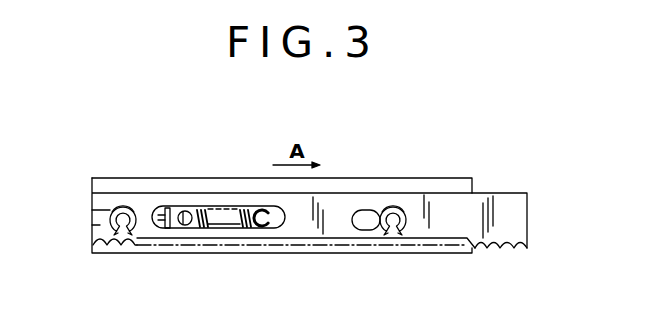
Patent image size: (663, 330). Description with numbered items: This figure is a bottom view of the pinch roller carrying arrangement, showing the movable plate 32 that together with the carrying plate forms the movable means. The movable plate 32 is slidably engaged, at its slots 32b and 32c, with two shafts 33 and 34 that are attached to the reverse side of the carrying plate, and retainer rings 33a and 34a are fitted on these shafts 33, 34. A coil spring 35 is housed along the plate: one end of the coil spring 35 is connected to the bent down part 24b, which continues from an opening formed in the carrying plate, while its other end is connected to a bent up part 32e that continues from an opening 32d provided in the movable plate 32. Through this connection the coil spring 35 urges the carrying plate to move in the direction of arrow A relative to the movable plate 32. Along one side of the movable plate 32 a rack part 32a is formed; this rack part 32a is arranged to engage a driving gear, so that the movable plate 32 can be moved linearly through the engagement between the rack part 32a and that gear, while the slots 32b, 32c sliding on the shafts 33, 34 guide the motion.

The movable plate 32 is at (510, 193).
The rack part 32a is at (478, 250).
The slot 32b is at (92, 225).
The slot 32c is at (368, 231).
The opening 32d is at (262, 229).
The bent up part 32e is at (268, 226).
The shaft 33 is at (123, 236).
The retainer ring 33a is at (125, 206).
The shaft 34 is at (395, 236).
The retainer ring 34a is at (412, 206).
The bent down part 24b is at (183, 228).
The coil spring 35 is at (238, 230).